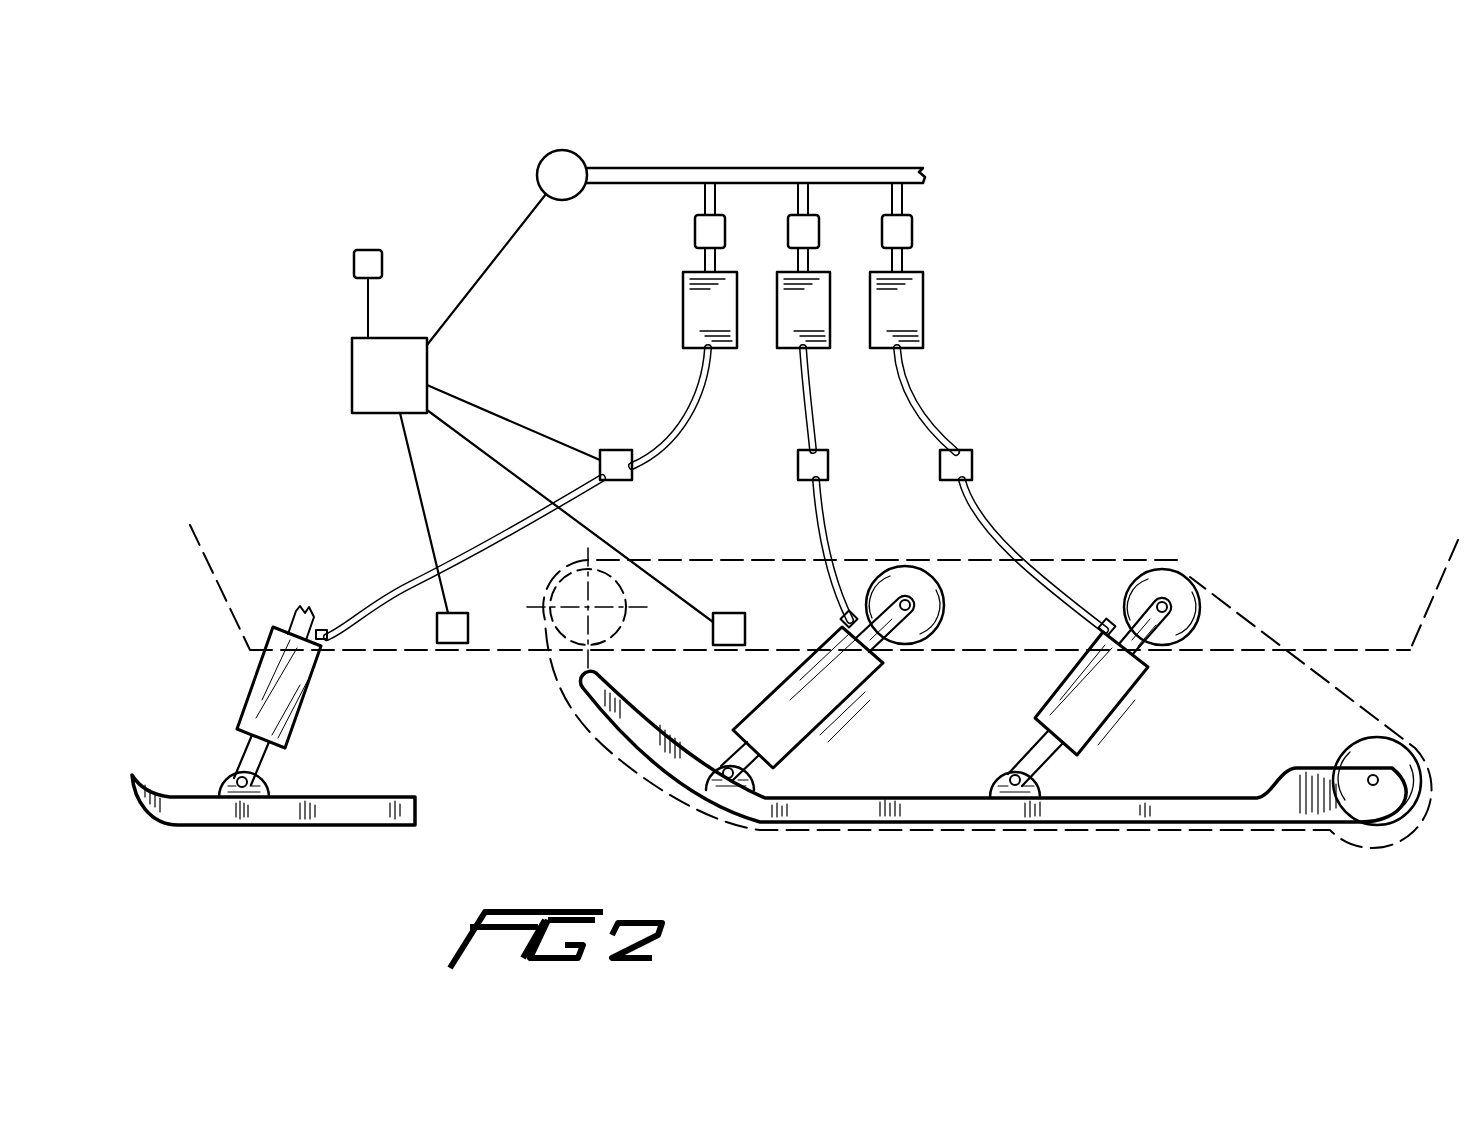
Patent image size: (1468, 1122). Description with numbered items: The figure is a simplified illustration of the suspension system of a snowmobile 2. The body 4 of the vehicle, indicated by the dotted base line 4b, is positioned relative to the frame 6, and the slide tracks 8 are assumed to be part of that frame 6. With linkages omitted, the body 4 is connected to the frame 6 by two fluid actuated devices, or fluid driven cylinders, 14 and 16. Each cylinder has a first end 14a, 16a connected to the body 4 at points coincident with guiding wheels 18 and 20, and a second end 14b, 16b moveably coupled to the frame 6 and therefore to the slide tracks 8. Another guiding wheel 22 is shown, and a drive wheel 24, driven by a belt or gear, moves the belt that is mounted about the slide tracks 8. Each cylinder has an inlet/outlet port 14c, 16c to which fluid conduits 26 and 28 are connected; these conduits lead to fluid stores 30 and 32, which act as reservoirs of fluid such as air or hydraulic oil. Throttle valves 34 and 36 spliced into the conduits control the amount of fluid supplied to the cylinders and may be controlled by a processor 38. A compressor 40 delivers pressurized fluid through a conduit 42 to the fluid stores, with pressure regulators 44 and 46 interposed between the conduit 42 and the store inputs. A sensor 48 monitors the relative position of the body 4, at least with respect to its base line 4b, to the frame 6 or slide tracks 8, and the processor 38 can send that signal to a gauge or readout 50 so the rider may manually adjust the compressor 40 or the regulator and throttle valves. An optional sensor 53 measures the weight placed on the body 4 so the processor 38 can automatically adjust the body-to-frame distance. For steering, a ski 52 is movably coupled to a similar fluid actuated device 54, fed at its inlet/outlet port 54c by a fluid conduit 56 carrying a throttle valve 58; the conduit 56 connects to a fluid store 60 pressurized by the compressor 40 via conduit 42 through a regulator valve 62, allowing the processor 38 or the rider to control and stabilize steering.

The snowmobile 2 is at (1331, 394).
The body 4 is at (1368, 568).
The dotted line 4b is at (1395, 655).
The frame 6 is at (962, 760).
The slide tracks 8 is at (858, 812).
The fluid actuated device 14 is at (772, 692).
The first end 14a is at (880, 654).
The second end 14b is at (762, 802).
The inlet/outlet port 14c is at (840, 618).
The fluid actuated device 16 is at (1063, 680).
The first end 16a is at (1142, 654).
The second end 16b is at (1046, 758).
The inlet/outlet port 16c is at (1098, 630).
The guiding wheel 18 is at (895, 566).
The guiding wheel 20 is at (1178, 569).
The guiding wheel 22 is at (1410, 822).
The drive wheel 24 is at (556, 632).
The fluid conduit 26 is at (818, 522).
The fluid conduit 28 is at (1002, 526).
The fluid store 30 is at (797, 352).
The fluid store 32 is at (923, 310).
The throttle valve 34 is at (798, 463).
The throttle valve 36 is at (972, 465).
The processor 38 is at (352, 380).
The compressor 40 is at (537, 172).
The conduit 42 is at (800, 168).
The pressure regulator 44 is at (788, 222).
The pressure regulator 46 is at (913, 232).
The sensor 48 is at (450, 645).
The gauge or readout 50 is at (352, 262).
The ski 52 is at (318, 826).
The sensor 53 is at (713, 640).
The fluid actuated device 54 is at (302, 692).
The inlet/outlet port 54c is at (322, 629).
The fluid conduit 56 is at (510, 546).
The throttle valve 58 is at (614, 450).
The fluid store 60 is at (683, 310).
The regulator valve 62 is at (695, 232).